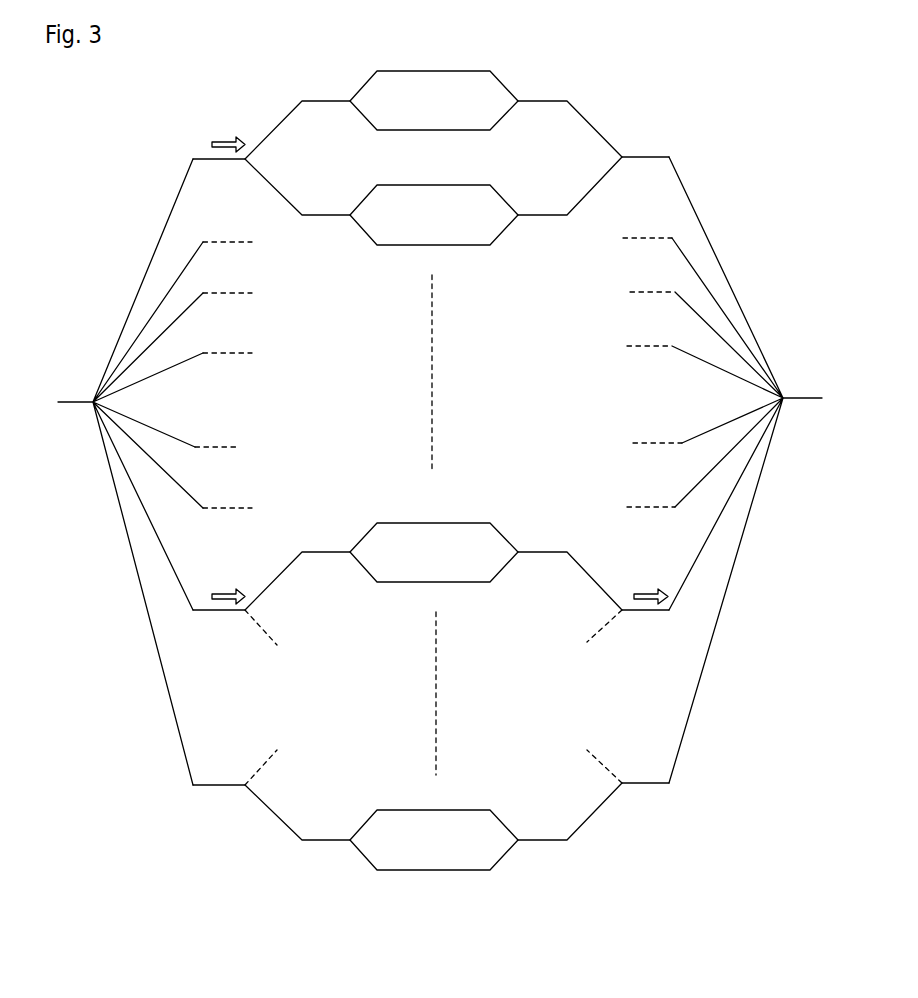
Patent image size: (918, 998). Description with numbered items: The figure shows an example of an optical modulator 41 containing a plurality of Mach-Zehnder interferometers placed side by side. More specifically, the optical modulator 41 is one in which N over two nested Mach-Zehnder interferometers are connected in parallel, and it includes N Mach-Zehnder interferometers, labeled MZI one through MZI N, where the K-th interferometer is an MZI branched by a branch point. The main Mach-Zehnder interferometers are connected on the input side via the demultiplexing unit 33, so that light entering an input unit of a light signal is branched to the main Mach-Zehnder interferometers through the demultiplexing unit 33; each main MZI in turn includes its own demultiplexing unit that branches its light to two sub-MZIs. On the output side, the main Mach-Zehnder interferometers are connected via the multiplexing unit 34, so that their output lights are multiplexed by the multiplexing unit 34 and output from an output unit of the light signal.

The demultiplexing unit 33 is at (93, 404).
The multiplexing unit 34 is at (783, 395).
The optical modulator 41 is at (627, 93).